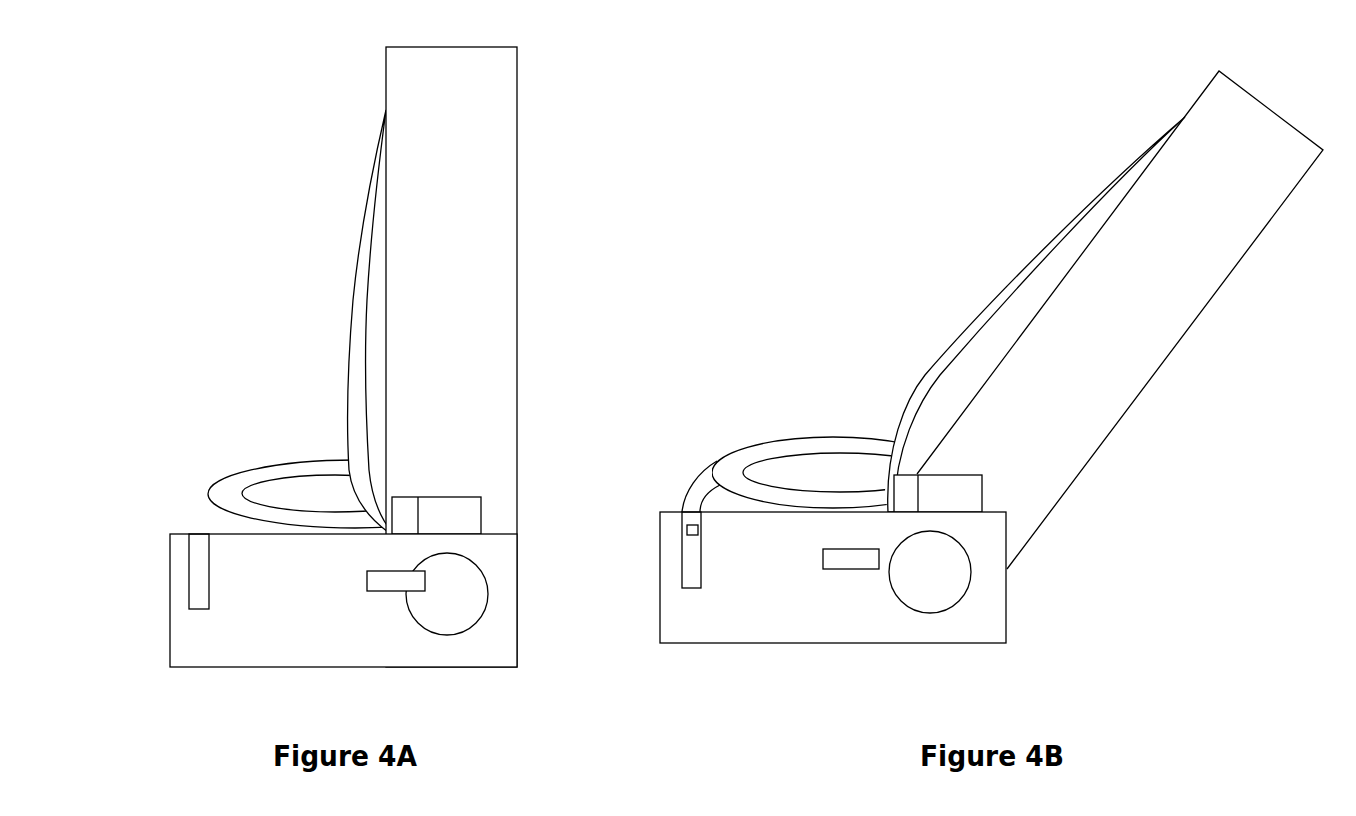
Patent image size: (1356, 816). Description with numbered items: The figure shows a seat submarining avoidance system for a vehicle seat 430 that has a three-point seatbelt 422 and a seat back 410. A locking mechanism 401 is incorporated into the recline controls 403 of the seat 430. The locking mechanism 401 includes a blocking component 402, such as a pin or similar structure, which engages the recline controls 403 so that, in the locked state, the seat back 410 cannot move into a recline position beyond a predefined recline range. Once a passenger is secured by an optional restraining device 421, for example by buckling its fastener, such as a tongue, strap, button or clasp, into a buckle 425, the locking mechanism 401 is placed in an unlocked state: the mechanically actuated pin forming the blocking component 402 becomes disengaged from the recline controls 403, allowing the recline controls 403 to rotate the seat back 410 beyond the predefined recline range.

In FIG. 4A, the locking mechanism 401 is at (357, 607).
In FIG. 4B, the locking mechanism 401 is at (826, 578).
In FIG. 4A, the blocking component 402 is at (393, 571).
In FIG. 4B, the blocking component 402 is at (855, 548).
In FIG. 4A, the recline controls 403 is at (445, 620).
In FIG. 4B, the recline controls 403 is at (916, 593).
In FIG. 4A, the seat back 410 is at (475, 352).
In FIG. 4B, the seat back 410 is at (1105, 375).
In FIG. 4B, the optional restraining device 421 is at (690, 485).
In FIG. 4A, the three-point seatbelt 422 is at (350, 333).
In FIG. 4B, the three-point seatbelt 422 is at (958, 336).
In FIG. 4A, the buckle 425 is at (198, 562).
In FIG. 4B, the buckle 425 is at (682, 537).
In FIG. 4A, the seat 430 is at (487, 650).
In FIG. 4B, the seat 430 is at (985, 628).